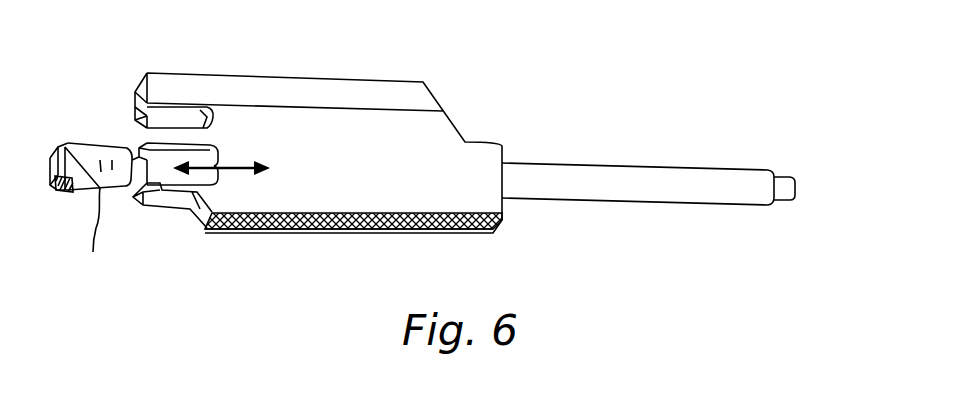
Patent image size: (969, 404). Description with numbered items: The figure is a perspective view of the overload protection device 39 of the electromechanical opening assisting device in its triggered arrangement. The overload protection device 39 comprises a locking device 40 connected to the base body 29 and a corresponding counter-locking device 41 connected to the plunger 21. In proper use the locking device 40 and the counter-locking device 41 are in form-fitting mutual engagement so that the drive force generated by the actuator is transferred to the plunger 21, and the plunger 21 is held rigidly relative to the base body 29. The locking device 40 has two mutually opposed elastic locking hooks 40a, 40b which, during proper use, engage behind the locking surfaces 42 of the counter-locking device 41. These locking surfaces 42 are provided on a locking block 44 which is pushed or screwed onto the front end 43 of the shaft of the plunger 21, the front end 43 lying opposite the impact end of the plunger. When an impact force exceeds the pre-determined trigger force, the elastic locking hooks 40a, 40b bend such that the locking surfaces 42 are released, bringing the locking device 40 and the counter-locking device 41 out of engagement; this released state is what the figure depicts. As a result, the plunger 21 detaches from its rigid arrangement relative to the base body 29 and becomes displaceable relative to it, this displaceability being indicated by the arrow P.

The plunger 21 is at (638, 182).
The base body 29 is at (318, 187).
The overload protection device 39 is at (142, 73).
The locking device 40 is at (138, 136).
The elastic locking hook 40a is at (190, 138).
The elastic locking hook 40b is at (177, 190).
The counter-locking device 41 is at (60, 148).
The locking surface 42 is at (65, 188).
The front end 43 is at (125, 192).
The locking block 44 is at (60, 167).
The arrow P is at (231, 167).